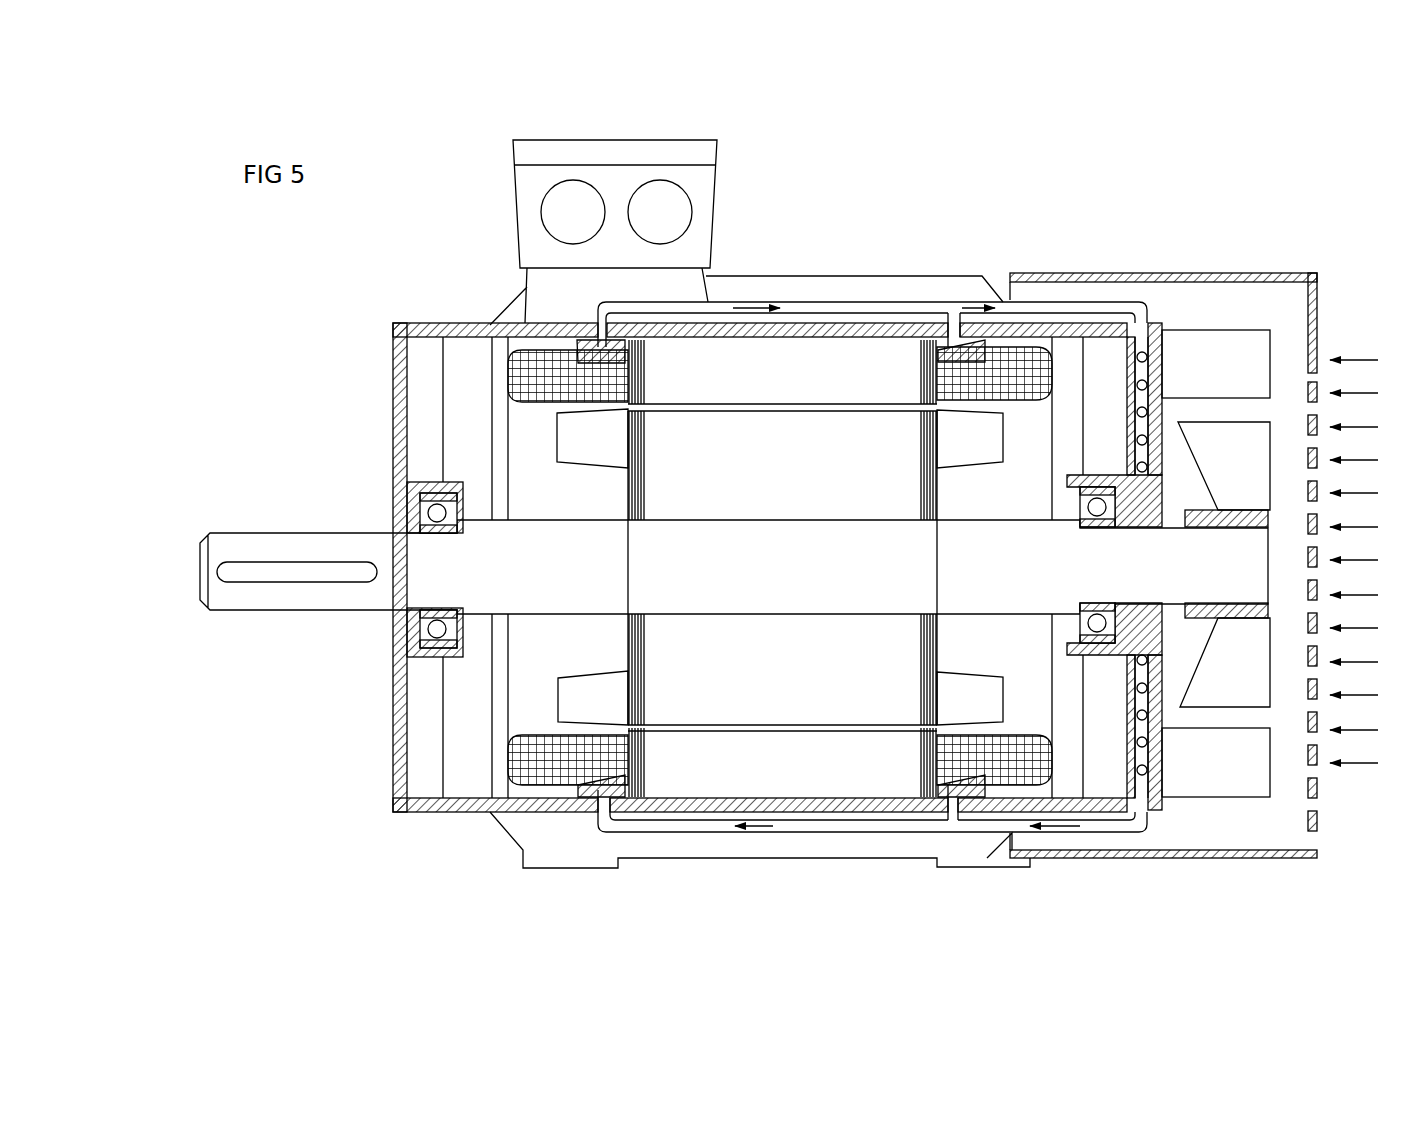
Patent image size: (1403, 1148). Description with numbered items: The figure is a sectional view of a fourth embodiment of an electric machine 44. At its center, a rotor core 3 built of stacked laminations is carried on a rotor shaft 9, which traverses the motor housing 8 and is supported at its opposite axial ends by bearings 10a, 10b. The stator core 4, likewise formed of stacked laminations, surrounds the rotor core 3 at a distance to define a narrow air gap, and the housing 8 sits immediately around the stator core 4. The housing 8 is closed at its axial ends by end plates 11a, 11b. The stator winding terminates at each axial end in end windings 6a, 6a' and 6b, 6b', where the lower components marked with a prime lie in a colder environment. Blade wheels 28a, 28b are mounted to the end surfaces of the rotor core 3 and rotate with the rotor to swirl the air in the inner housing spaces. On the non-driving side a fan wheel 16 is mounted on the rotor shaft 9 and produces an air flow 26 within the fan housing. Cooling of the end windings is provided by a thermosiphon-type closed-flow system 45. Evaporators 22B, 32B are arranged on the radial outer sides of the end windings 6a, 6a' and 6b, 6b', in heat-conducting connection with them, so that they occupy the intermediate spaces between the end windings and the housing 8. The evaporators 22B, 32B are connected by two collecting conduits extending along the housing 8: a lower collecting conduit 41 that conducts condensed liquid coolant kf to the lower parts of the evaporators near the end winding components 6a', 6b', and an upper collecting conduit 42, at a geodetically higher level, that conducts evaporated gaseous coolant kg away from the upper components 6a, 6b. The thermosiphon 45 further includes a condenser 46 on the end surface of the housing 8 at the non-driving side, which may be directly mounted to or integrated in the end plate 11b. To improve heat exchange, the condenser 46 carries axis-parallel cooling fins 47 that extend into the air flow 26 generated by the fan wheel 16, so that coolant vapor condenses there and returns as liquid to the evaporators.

The rotor core 3 is at (815, 398).
The stator core 4 is at (825, 508).
The end winding 6a is at (568, 405).
The end winding 6b is at (994, 400).
The end winding 6a' is at (568, 732).
The end winding 6b' is at (994, 732).
The motor housing 8 is at (808, 337).
The rotor shaft 9 is at (770, 600).
The bearing 10a is at (437, 522).
The bearing 10b is at (1098, 612).
The end plate 11a is at (398, 440).
The end plate 11b is at (1158, 360).
The fan wheel 16 is at (1238, 700).
The evaporator 22B is at (602, 345).
The air flow 26 is at (1362, 355).
The blade wheel 28a is at (590, 458).
The blade wheel 28b is at (980, 690).
The evaporator 32B is at (950, 790).
The collecting conduit 41 is at (822, 835).
The collecting conduit 42 is at (875, 308).
The electric machine 44 is at (998, 185).
The thermosiphon-type closed-flow system 45 is at (1123, 293).
The condenser 46 is at (1147, 665).
The cooling fins 47 is at (1222, 342).
The gaseous coolant kg is at (752, 310).
The liquid coolant kf is at (762, 832).